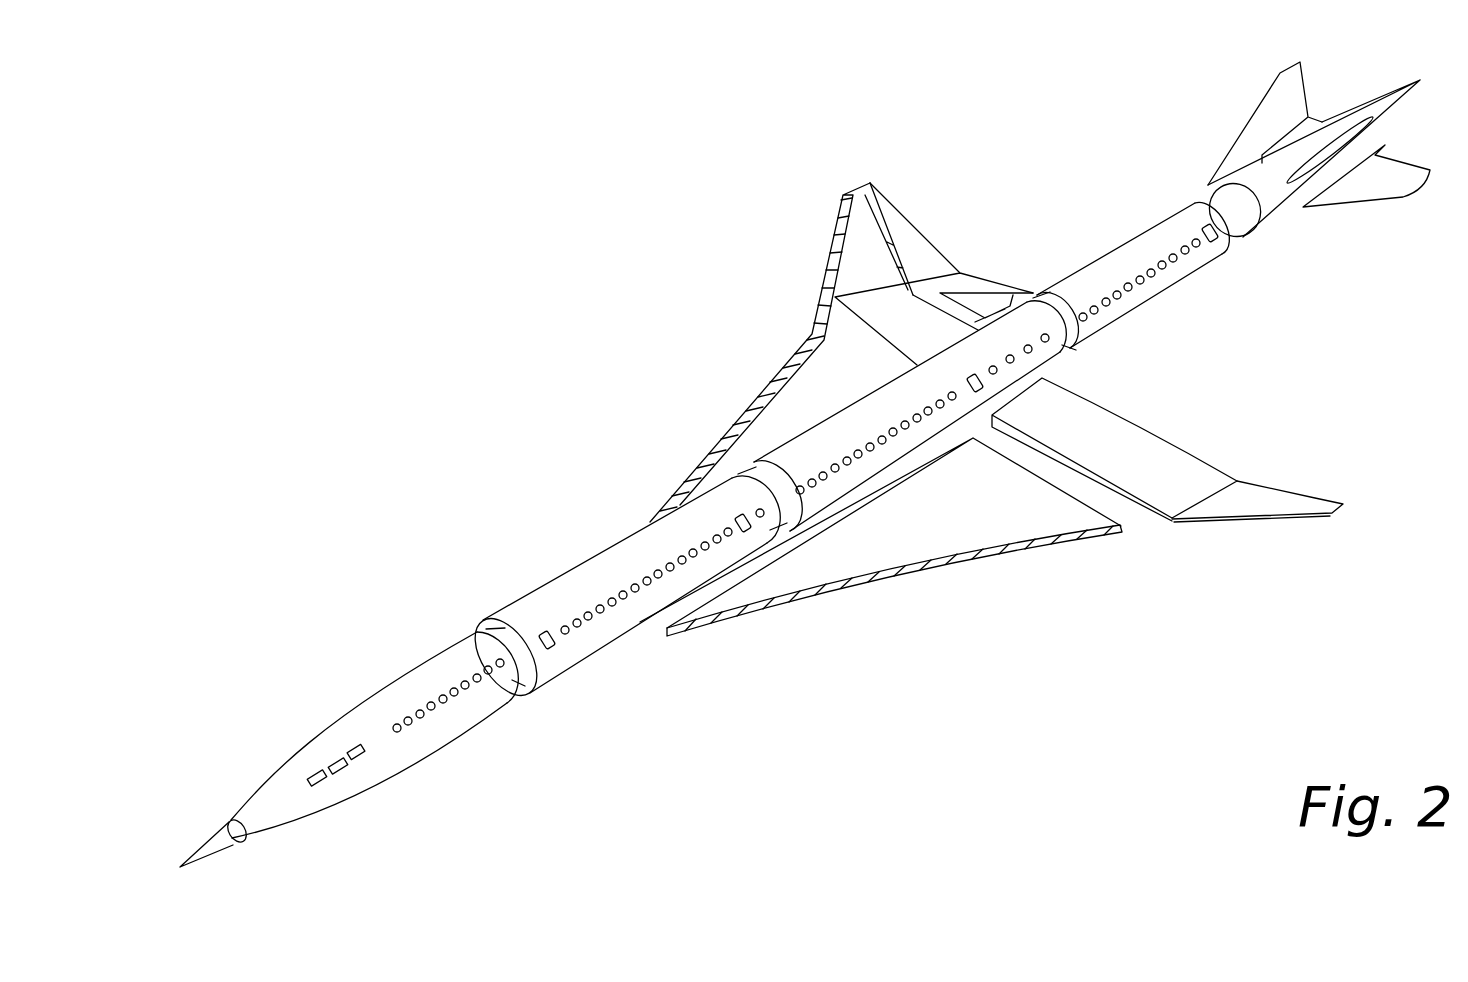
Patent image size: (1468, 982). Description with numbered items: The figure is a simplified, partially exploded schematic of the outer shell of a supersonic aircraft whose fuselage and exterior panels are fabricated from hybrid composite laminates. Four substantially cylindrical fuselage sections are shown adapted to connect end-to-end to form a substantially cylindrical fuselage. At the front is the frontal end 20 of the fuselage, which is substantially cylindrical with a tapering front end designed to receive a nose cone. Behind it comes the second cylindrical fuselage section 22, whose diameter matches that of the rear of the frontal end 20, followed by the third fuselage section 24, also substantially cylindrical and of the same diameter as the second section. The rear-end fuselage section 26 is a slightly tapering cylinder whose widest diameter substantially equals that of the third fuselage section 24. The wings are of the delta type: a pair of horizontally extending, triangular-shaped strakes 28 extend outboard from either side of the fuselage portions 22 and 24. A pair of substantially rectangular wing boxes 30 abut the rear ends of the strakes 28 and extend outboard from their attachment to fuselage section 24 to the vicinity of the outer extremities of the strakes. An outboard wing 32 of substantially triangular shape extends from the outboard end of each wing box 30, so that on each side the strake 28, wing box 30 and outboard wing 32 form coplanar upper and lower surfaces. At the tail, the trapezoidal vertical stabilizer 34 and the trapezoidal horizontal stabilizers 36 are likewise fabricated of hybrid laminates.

The frontal end of the fuselage 20 is at (363, 710).
The second cylindrical fuselage section 22 is at (570, 587).
The third fuselage section 24 is at (783, 460).
The rear-end fuselage section 26 is at (1117, 253).
The strakes 28 is at (827, 403).
The wing boxes 30 is at (922, 332).
The outboard wing 32 is at (868, 277).
The vertical stabilizer 34 is at (1270, 120).
The horizontal stabilizers 36 is at (1373, 192).